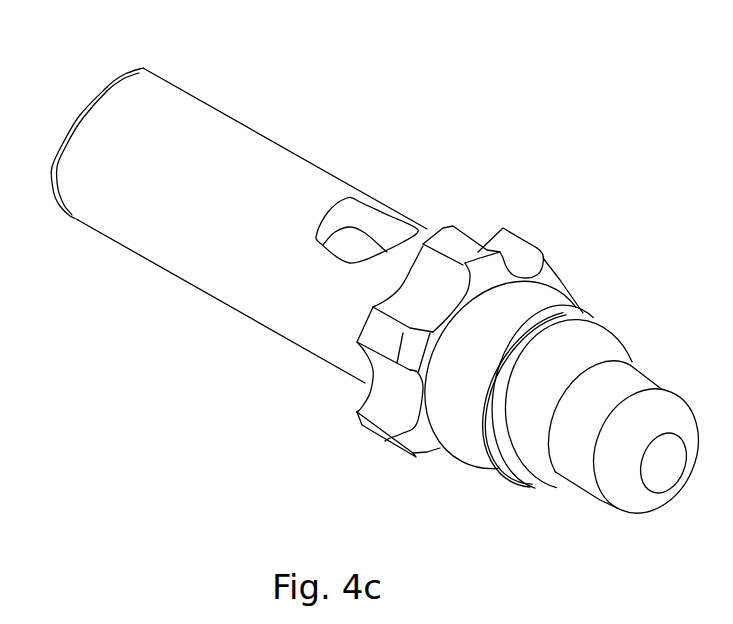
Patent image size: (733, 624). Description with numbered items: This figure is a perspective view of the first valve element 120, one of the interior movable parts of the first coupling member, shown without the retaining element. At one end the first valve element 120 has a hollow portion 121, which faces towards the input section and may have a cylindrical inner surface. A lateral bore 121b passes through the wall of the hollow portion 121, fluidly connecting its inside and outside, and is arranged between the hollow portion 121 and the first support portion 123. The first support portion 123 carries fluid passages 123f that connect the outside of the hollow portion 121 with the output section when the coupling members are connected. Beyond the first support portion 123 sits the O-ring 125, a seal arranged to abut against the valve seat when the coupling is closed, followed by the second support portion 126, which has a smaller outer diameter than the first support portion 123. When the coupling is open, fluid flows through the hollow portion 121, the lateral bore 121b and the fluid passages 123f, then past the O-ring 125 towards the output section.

The first valve element 120 is at (384, 272).
The hollow portion 121 is at (233, 153).
The lateral bore 121b is at (365, 232).
The first support portion 123 is at (470, 265).
The fluid passages 123f is at (513, 252).
The O-ring 125 is at (567, 290).
The second support portion 126 is at (591, 317).